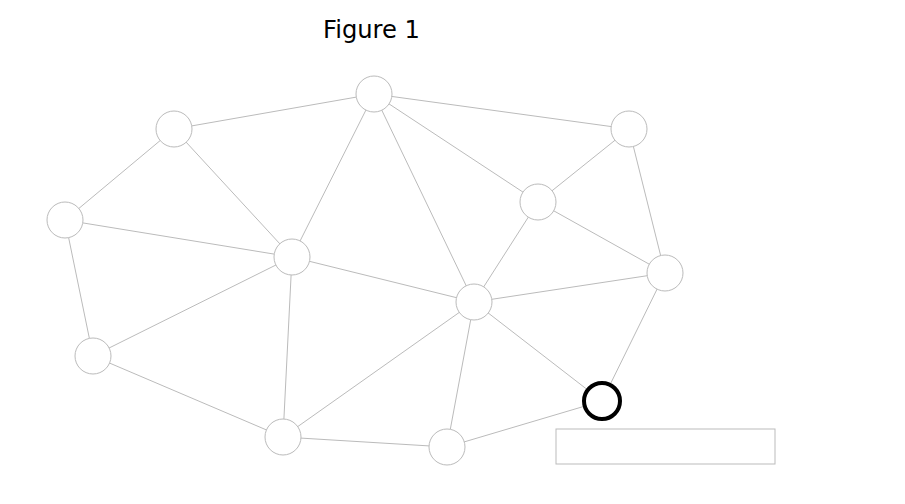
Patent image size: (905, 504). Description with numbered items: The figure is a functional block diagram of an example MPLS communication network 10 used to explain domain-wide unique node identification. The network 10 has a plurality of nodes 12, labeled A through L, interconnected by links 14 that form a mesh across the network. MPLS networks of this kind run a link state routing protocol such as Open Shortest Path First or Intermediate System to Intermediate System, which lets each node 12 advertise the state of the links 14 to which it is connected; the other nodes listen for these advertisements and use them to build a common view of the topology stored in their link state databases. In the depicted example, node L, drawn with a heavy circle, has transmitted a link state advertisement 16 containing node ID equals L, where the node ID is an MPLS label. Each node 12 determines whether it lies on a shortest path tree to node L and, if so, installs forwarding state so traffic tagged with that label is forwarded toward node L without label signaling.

The MPLS communication network 10 is at (583, 84).
The node 12 is at (639, 112).
The link 14 is at (458, 102).
The link state advertisement 16 is at (683, 429).